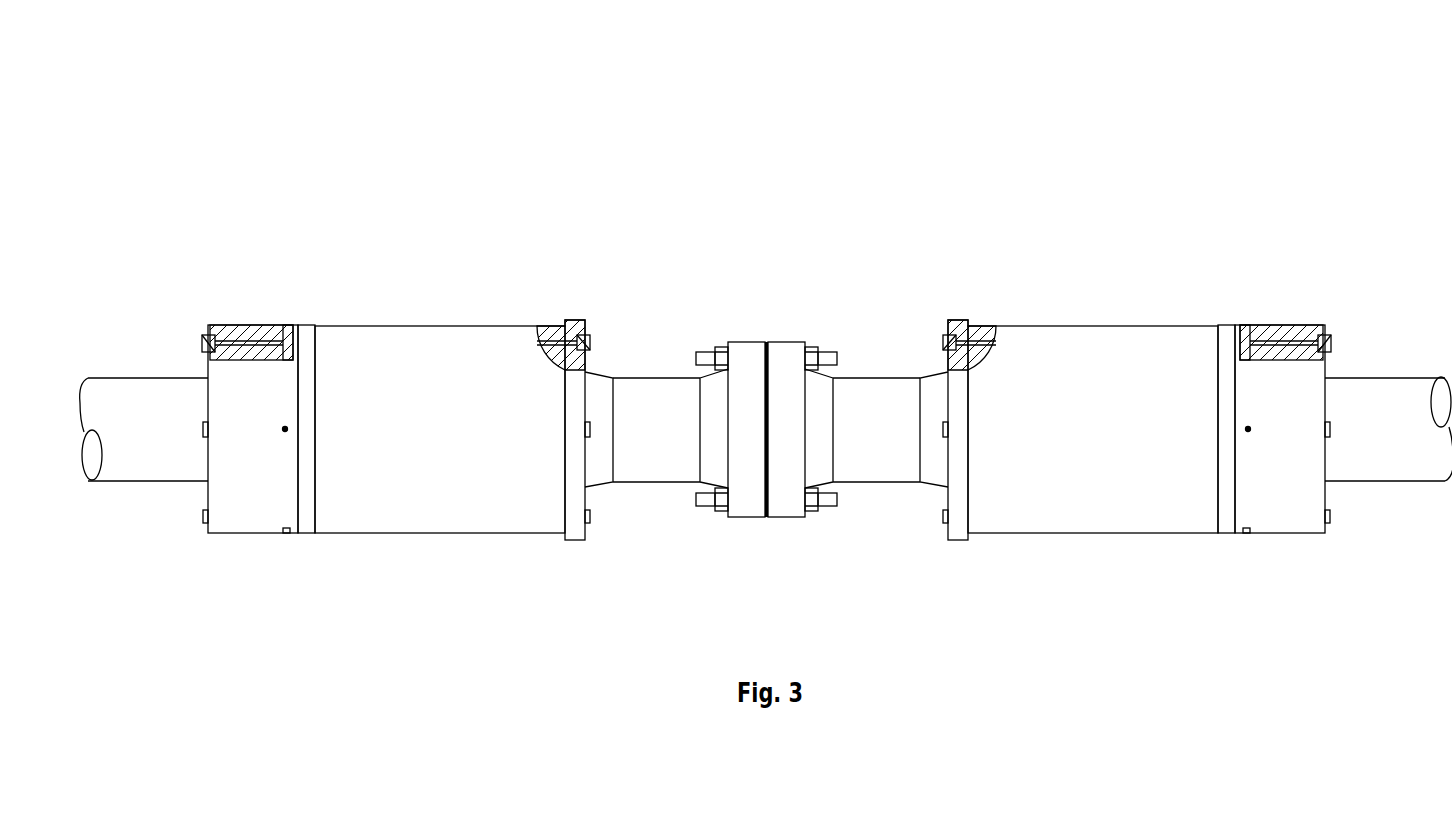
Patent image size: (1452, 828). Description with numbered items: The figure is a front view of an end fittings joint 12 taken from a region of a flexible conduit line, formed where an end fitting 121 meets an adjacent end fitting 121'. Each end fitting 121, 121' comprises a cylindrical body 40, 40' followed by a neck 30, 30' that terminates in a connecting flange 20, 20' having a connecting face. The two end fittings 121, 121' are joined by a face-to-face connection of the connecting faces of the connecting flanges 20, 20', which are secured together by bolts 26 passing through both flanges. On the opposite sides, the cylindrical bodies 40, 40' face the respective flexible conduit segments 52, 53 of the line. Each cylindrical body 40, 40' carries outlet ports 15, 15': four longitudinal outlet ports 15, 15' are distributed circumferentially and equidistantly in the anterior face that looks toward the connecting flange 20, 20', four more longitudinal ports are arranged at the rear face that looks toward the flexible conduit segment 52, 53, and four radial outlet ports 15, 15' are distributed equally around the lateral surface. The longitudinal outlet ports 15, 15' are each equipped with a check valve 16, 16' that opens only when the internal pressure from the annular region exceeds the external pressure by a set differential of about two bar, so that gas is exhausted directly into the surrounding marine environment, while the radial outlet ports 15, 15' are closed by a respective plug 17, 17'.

The end fittings joint 12 is at (793, 165).
The outlet port 15 is at (400, 401).
The outlet port 15' is at (1145, 401).
The check valve 16 is at (401, 448).
The check valve 16' is at (1143, 461).
The plug 17 is at (286, 420).
The plug 17' is at (1261, 419).
The connecting flange 20 is at (751, 463).
The connecting flange 20' is at (798, 462).
The bolt 26 is at (705, 358).
The neck 30 is at (656, 453).
The neck 30' is at (876, 453).
The cylindrical body 40 is at (440, 387).
The cylindrical body 40' is at (1093, 386).
The flexible conduit segment 52 is at (145, 448).
The flexible conduit segment 53 is at (1395, 452).
The end fitting 121 is at (452, 609).
The end fitting 121' is at (1093, 610).